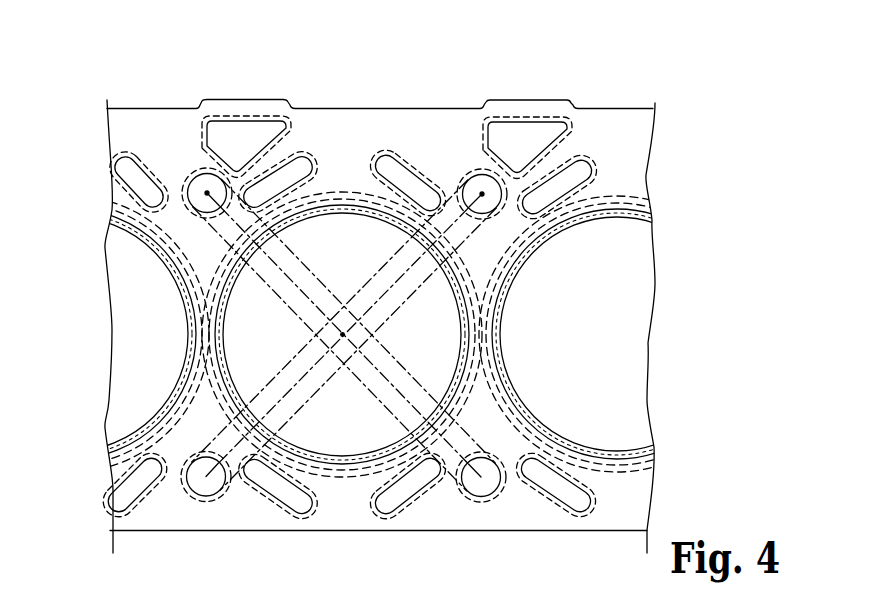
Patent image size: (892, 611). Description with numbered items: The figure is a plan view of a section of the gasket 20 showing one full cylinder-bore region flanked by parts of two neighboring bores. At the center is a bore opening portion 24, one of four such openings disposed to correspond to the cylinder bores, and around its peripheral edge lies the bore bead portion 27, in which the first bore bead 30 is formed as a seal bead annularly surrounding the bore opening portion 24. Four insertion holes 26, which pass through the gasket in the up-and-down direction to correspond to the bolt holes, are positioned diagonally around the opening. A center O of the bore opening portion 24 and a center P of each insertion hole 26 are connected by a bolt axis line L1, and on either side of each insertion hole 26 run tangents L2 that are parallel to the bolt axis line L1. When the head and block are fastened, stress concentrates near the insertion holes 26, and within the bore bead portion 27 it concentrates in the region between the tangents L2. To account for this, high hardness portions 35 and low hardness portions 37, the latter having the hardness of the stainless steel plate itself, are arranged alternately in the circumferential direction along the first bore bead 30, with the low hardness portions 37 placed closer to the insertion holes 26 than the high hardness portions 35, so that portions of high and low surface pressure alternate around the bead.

The gasket 20 is at (652, 157).
The bore opening portion 24 is at (436, 349).
The insertion hole 26 is at (201, 171).
The bore bead portion 27 is at (360, 198).
The first bore bead 30 is at (328, 199).
The high hardness portion 35 is at (321, 202).
The low hardness portion 37 is at (245, 236).
The center of insertion hole P is at (207, 191).
The center of bore opening portion O is at (343, 337).
The bolt axis line L1 is at (305, 293).
The tangents of insertion hole L2 is at (310, 268).